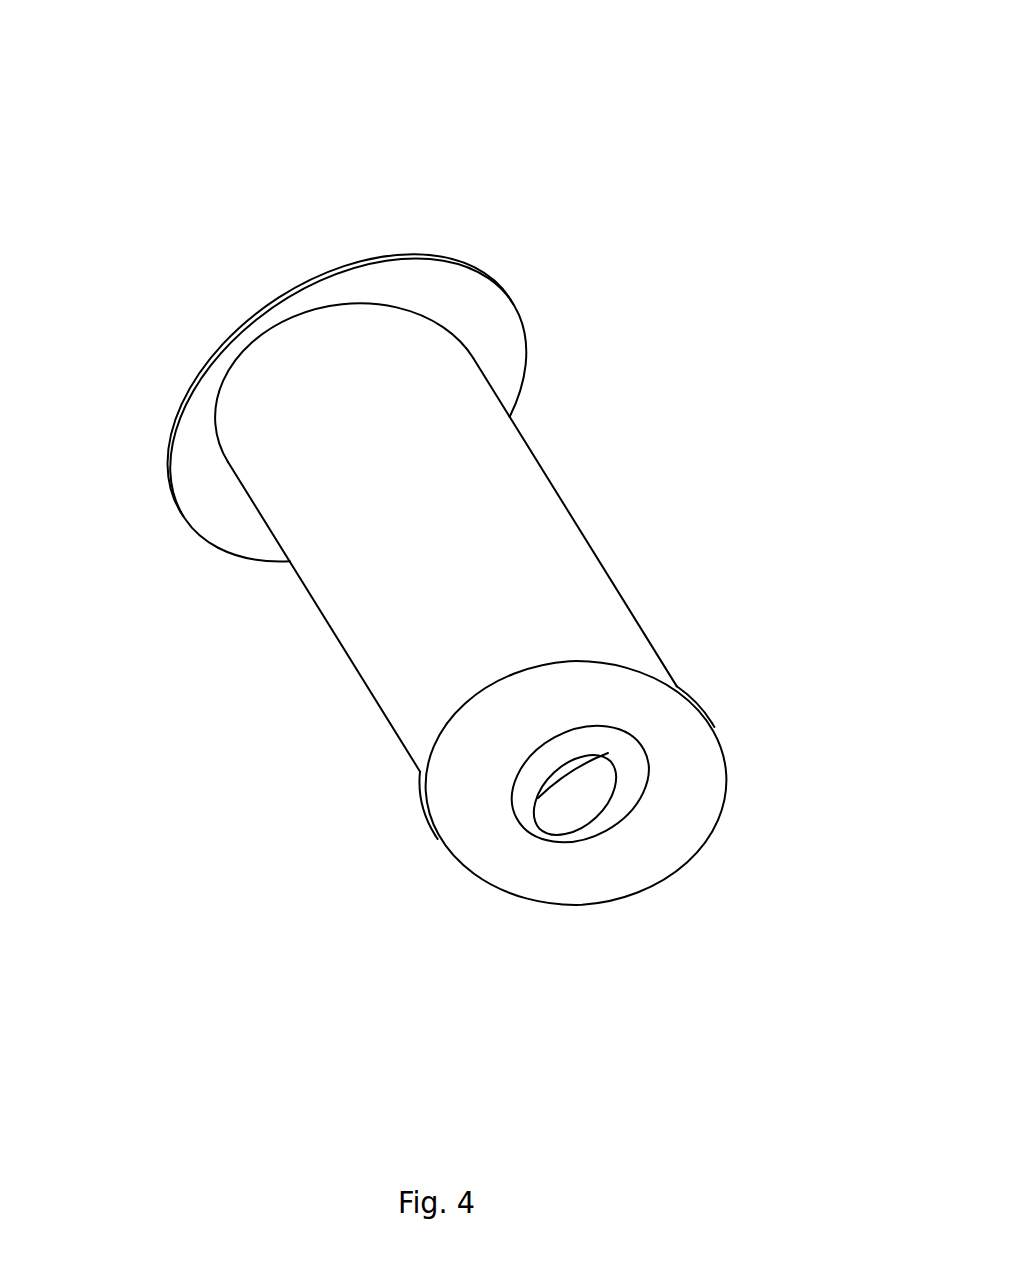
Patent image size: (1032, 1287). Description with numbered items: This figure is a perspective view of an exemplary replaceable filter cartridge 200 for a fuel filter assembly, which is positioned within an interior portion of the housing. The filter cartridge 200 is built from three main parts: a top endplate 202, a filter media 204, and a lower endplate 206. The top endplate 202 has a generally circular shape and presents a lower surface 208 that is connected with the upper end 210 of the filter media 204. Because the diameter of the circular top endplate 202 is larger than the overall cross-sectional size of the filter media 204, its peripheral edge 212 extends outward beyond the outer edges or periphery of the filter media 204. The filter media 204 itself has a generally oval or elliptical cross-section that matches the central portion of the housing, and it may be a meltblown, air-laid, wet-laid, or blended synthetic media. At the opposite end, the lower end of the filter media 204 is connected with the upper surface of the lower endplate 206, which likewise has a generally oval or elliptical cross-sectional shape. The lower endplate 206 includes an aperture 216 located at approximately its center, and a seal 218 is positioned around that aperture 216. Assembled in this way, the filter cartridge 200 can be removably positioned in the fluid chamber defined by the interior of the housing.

The filter cartridge 200 is at (350, 120).
The top endplate 202 is at (233, 328).
The filter media 204 is at (555, 490).
The lower endplate 206 is at (677, 730).
The lower surface 208 is at (467, 297).
The upper end 210 is at (293, 318).
The peripheral edge 212 is at (205, 475).
The aperture 216 is at (570, 775).
The seal 218 is at (612, 790).